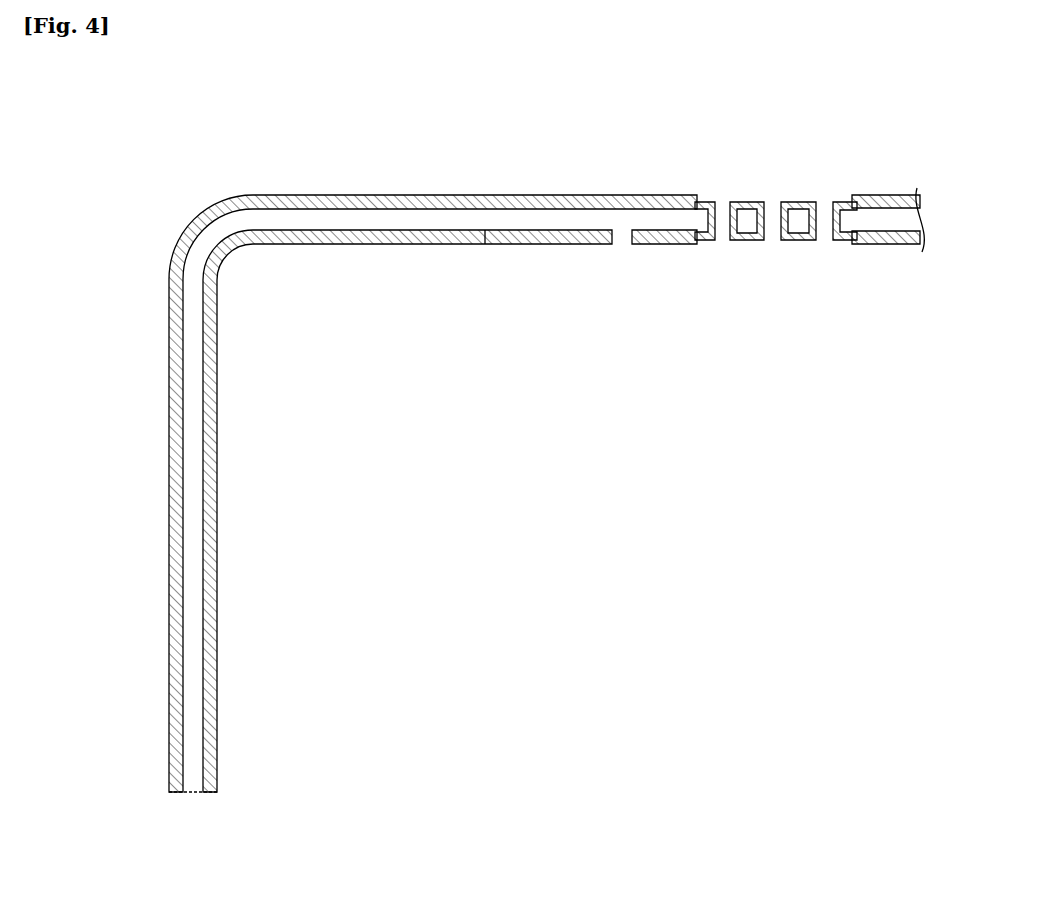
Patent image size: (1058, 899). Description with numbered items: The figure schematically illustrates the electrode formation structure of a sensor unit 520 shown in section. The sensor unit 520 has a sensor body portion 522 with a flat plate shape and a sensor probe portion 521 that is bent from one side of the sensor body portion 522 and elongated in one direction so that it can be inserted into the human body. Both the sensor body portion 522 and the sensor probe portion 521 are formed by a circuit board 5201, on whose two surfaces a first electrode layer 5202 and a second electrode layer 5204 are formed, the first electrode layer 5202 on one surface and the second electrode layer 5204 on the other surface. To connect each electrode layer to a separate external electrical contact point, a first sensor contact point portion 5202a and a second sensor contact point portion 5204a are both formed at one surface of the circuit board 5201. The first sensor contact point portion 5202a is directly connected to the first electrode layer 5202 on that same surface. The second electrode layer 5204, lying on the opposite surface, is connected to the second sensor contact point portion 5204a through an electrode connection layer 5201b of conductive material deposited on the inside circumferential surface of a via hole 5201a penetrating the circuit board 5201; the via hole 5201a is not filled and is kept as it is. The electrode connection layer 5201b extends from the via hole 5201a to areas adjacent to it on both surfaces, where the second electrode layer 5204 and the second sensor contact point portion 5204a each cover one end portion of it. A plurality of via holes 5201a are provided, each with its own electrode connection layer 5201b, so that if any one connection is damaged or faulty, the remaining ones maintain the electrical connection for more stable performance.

The sensor unit 520 is at (492, 449).
The sensor probe portion 521 is at (152, 620).
The sensor body portion 522 is at (387, 180).
The circuit board 5201 is at (195, 437).
The via hole 5201a is at (721, 212).
The electrode connection layer 5201b is at (711, 204).
The first electrode layer 5202 is at (450, 511).
The first sensor contact point portion 5202a is at (611, 248).
The second electrode layer 5204 is at (168, 301).
The second sensor contact point portion 5204a is at (778, 204).